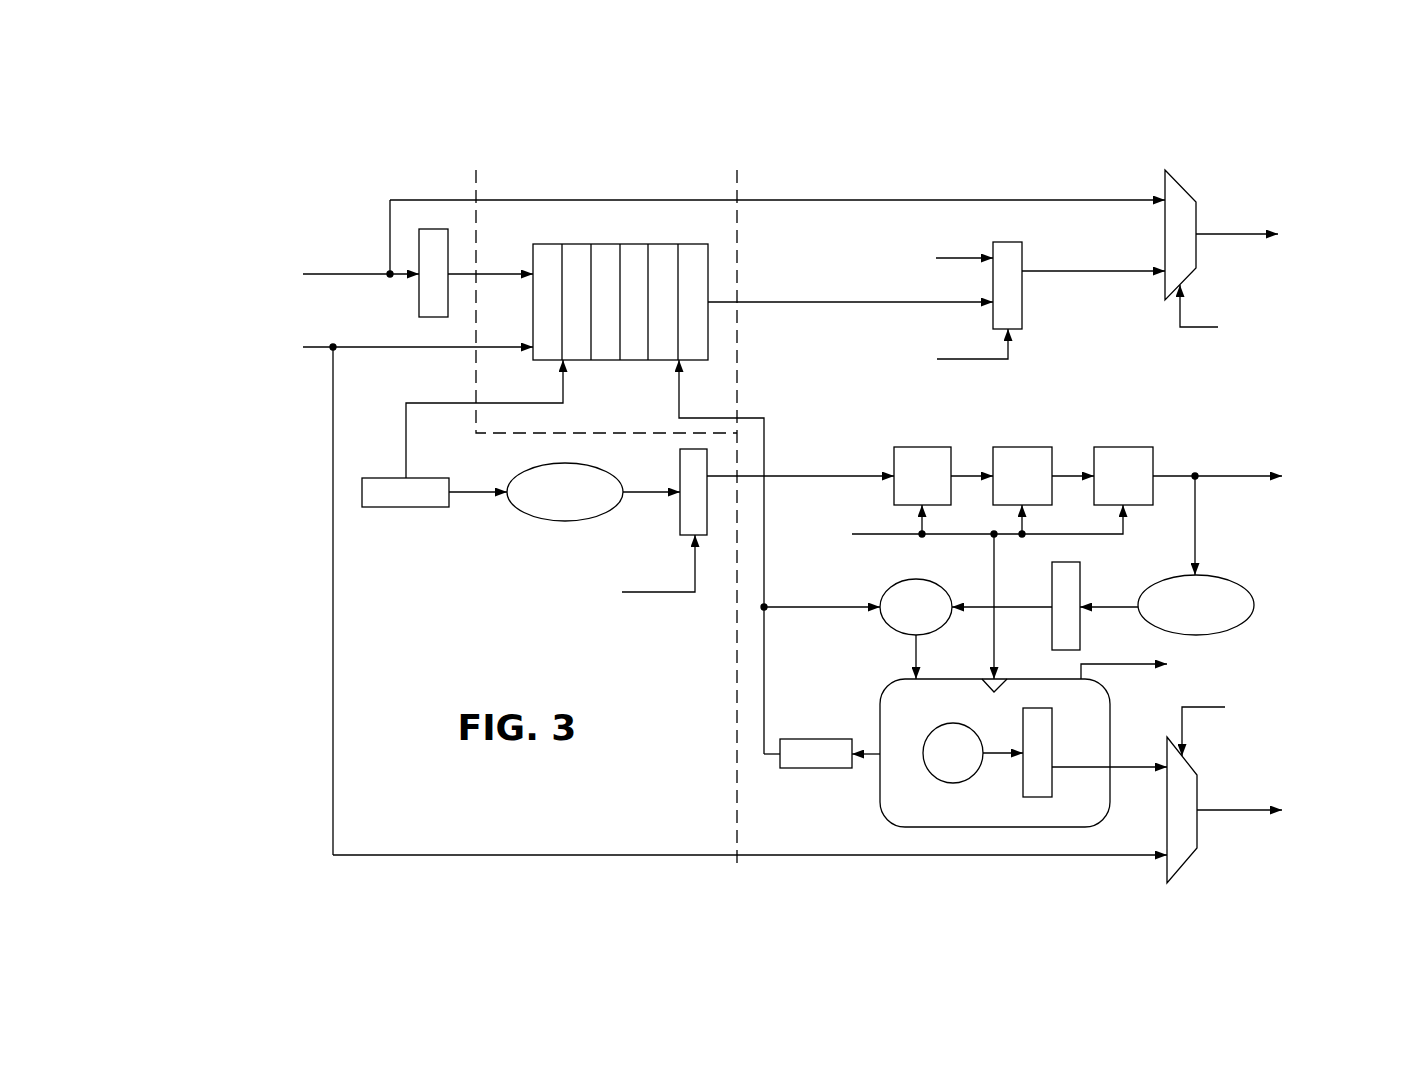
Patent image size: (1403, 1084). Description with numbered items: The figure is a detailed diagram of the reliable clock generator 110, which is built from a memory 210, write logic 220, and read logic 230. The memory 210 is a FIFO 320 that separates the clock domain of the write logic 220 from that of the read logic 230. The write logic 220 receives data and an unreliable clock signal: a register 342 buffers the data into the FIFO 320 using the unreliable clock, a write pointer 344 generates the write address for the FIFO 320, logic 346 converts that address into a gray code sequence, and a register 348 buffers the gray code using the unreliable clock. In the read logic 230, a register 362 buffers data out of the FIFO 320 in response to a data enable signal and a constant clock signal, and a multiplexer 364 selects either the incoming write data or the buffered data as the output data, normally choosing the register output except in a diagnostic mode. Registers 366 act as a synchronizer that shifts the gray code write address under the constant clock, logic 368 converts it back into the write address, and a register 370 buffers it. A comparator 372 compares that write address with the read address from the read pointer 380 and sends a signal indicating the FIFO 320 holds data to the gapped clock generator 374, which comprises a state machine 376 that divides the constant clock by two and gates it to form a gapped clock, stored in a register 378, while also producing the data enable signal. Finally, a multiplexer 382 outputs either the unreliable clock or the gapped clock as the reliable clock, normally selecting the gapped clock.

The clock generator 110 is at (1242, 120).
The write logic 220 is at (344, 182).
The memory 210 is at (604, 182).
The read logic 230 is at (949, 180).
The register 342 is at (419, 288).
The write pointer 344 is at (413, 508).
The logic 346 is at (520, 515).
The register 348 is at (678, 507).
The FIFO 320 is at (600, 362).
The register 362 is at (1023, 243).
The multiplexer 364 is at (1188, 186).
The registers 366 is at (925, 445).
The logic 368 is at (1235, 580).
The register 370 is at (1050, 588).
The comparator 372 is at (895, 580).
The gapped clock generator 374 is at (878, 797).
The state machine 376 is at (932, 776).
The register 378 is at (1023, 775).
The read pointer 380 is at (820, 770).
The multiplexer 382 is at (1197, 775).